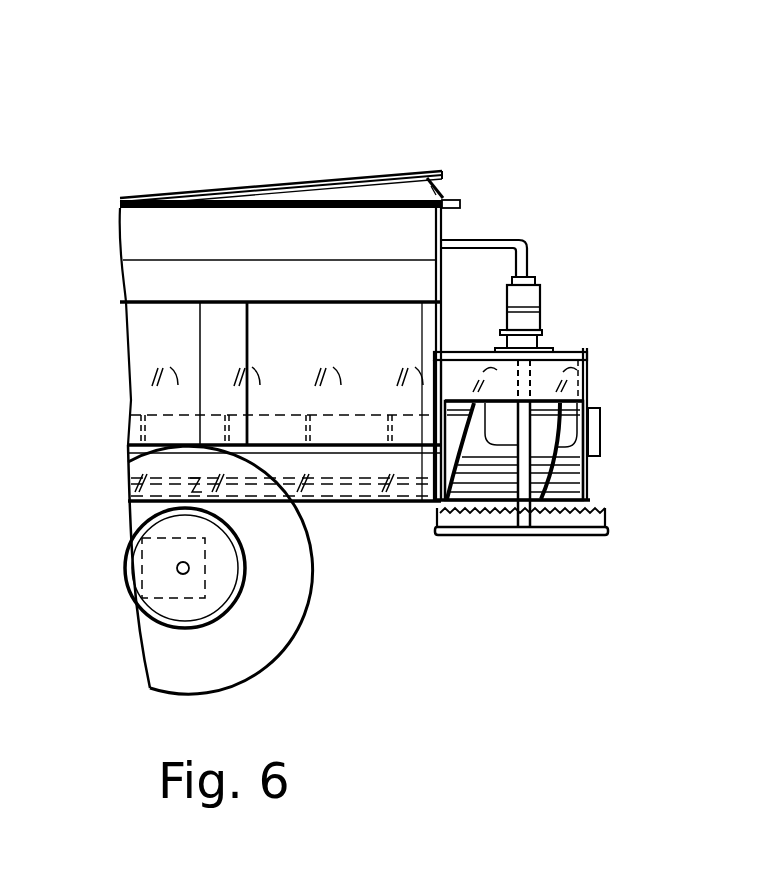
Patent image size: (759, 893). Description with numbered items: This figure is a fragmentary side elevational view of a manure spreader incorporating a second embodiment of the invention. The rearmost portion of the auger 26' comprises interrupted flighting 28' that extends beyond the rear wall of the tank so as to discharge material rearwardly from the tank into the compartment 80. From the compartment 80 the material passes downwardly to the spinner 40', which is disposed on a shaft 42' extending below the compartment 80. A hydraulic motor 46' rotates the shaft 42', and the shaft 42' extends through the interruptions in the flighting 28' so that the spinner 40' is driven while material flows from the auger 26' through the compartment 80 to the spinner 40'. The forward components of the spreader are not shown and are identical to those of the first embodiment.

The auger 26' is at (290, 293).
The hydraulic motor 46' is at (546, 267).
The compartment 80 is at (574, 342).
The interrupted flighting 28' is at (573, 450).
The shaft 42' is at (456, 499).
The spinner 40' is at (558, 562).